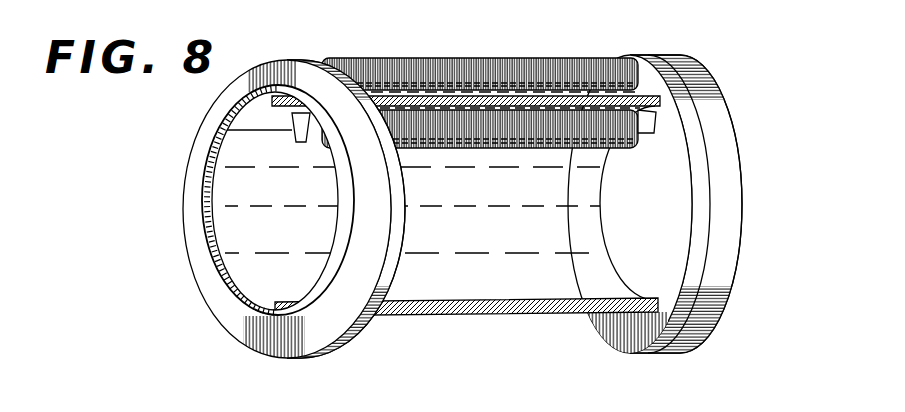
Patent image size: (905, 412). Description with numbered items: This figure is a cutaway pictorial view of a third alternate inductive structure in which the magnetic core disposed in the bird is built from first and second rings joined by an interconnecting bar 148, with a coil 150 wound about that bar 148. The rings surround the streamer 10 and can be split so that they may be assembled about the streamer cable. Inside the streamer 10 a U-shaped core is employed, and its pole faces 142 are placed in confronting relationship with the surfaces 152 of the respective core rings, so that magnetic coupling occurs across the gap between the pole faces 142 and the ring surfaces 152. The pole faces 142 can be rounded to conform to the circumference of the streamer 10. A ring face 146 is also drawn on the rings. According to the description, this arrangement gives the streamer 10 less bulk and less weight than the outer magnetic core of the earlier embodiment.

The streamer 10 is at (432, 319).
The pole faces 142 is at (662, 103).
The ring face 146 is at (723, 160).
The interconnecting bar 148 is at (321, 62).
The coil 150 is at (474, 88).
The surfaces of the core rings 152 is at (600, 316).